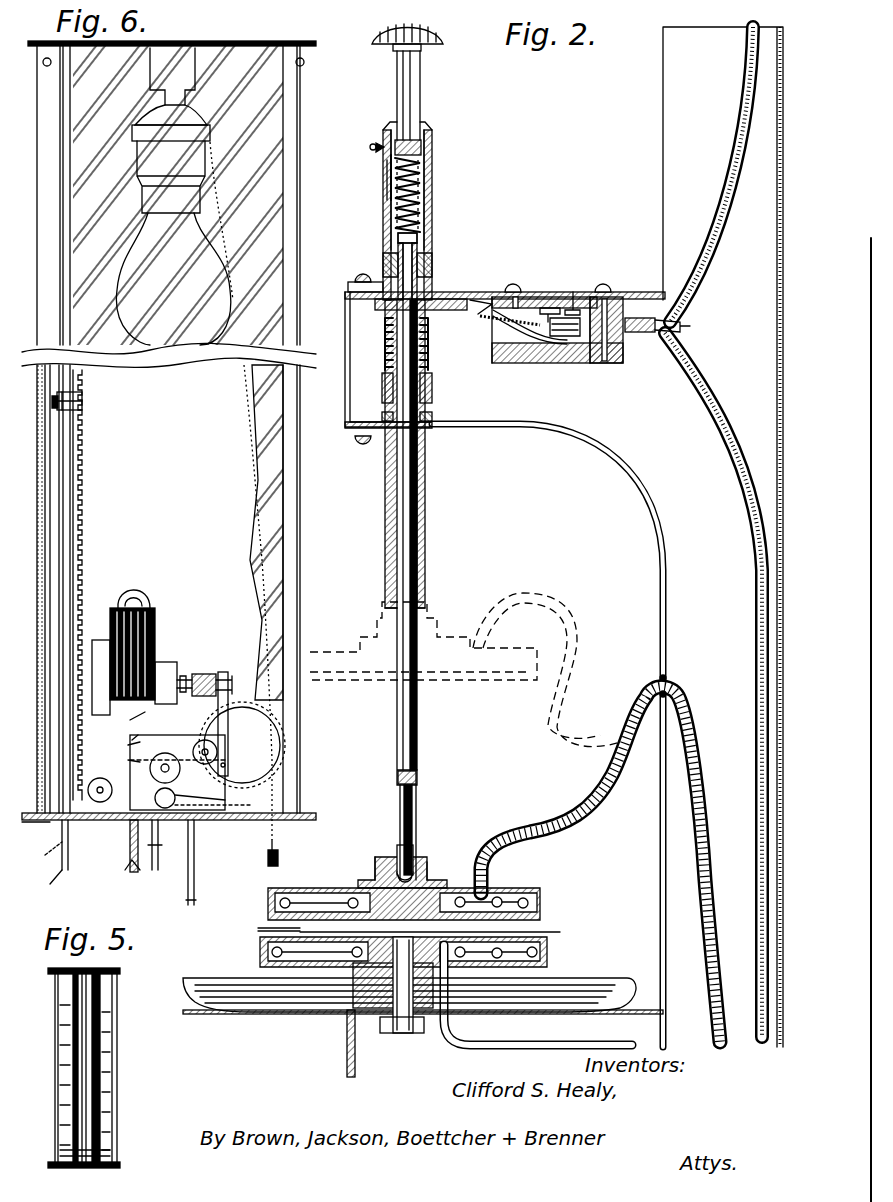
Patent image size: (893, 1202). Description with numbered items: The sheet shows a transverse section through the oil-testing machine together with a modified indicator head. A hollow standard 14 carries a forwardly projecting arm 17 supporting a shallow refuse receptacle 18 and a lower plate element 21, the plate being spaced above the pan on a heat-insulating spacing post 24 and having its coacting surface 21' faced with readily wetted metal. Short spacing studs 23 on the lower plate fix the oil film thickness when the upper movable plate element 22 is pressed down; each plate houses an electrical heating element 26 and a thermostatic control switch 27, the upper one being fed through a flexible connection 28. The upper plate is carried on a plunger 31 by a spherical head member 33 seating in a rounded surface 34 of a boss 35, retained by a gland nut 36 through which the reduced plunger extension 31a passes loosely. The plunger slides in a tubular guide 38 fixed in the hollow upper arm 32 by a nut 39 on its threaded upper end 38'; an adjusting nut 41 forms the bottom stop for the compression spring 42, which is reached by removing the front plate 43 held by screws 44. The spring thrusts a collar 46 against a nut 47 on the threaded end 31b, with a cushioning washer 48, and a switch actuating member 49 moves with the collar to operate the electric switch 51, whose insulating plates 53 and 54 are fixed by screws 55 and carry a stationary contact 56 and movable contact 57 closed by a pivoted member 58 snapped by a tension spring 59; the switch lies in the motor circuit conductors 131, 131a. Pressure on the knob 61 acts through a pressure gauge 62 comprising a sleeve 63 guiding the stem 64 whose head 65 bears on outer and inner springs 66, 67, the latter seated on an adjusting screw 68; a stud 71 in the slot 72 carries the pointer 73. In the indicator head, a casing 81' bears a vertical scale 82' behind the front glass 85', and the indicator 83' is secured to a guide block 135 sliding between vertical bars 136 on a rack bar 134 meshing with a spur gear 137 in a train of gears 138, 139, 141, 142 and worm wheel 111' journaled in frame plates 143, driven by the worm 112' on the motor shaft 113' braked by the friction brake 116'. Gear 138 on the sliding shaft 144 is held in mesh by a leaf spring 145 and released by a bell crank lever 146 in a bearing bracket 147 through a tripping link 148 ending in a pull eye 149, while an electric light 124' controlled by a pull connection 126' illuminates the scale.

In FIG. 6, the standard 14 is at (62, 872).
In FIG. 5, the standard 14 is at (50, 1166).
In FIG. 2, the standard 14 is at (659, 824).
In FIG. 2, the arm 17 is at (347, 1062).
In FIG. 2, the refuse receptacle 18 is at (213, 1014).
In FIG. 2, the lower plate element 21 is at (424, 952).
In FIG. 2, the coacting surface of lower plate element 21' is at (453, 930).
In FIG. 2, the upper movable plate element 22 is at (526, 680).
In FIG. 2, the spacing studs 23 is at (258, 930).
In FIG. 2, the spacing post 24 is at (342, 1010).
In FIG. 2, the electrical heating element 26 is at (335, 890).
In FIG. 2, the thermostatic control switch 27 is at (504, 895).
In FIG. 2, the flexible connection 28 is at (590, 790).
In FIG. 2, the plunger 31 is at (418, 706).
In FIG. 2, the reduced plunger extension 31a is at (414, 808).
In FIG. 2, the reduced threaded end of plunger rod 31b is at (384, 270).
In FIG. 2, the upper arm 32 is at (498, 426).
In FIG. 2, the head member 33 is at (437, 878).
In FIG. 2, the rounded surface 34 is at (374, 882).
In FIG. 2, the boss 35 is at (425, 862).
In FIG. 2, the gland nut 36 is at (382, 858).
In FIG. 2, the tubular guide 38 is at (425, 454).
In FIG. 2, the threaded upper end of tubular guide 38' is at (425, 409).
In FIG. 2, the nut 39 is at (350, 420).
In FIG. 2, the adjusting nut 41 is at (382, 390).
In FIG. 2, the compression spring 42 is at (432, 355).
In FIG. 2, the removable front plate 43 is at (346, 352).
In FIG. 2, the screws 44 is at (354, 288).
In FIG. 2, the collar 46 is at (425, 280).
In FIG. 2, the nut 47 is at (420, 262).
In FIG. 2, the cushioning washer 48 is at (436, 295).
In FIG. 2, the switch actuating member 49 is at (378, 308).
In FIG. 2, the electric switch 51 is at (636, 375).
In FIG. 2, the upper insulating plate 53 is at (574, 290).
In FIG. 2, the lower insulating plate 54 is at (598, 366).
In FIG. 2, the screws 55 is at (513, 284).
In FIG. 2, the stationary contact 56 is at (550, 296).
In FIG. 2, the movable contact 57 is at (574, 364).
In FIG. 2, the switch actuating member 58 is at (514, 364).
In FIG. 2, the tension spring 59 is at (495, 318).
In FIG. 2, the knob 61 is at (388, 33).
In FIG. 2, the pressure gauge 62 is at (366, 190).
In FIG. 2, the sleeve 63 is at (433, 218).
In FIG. 2, the stem 64 is at (422, 90).
In FIG. 2, the head 65 is at (424, 151).
In FIG. 2, the outer compression spring 66 is at (424, 172).
In FIG. 2, the inner compression spring 67 is at (425, 192).
In FIG. 2, the adjusting screw 68 is at (395, 250).
In FIG. 2, the stud 71 is at (388, 160).
In FIG. 2, the vertical slot 72 is at (388, 198).
In FIG. 2, the pointer 73 is at (372, 145).
In FIG. 6, the casing 81' is at (172, 27).
In FIG. 5, the casing 81' is at (107, 962).
In FIG. 5, the scale 82' is at (110, 1068).
In FIG. 6, the indicator 83' is at (30, 423).
In FIG. 5, the indicator 83' is at (109, 1146).
In FIG. 6, the front glass 85' is at (153, 429).
In FIG. 5, the front glass 85' is at (121, 1068).
In FIG. 6, the worm wheel 111' is at (218, 661).
In FIG. 6, the worm 112' is at (210, 675).
In FIG. 6, the motor shaft 113' is at (190, 664).
In FIG. 6, the friction brake 116' is at (246, 710).
In FIG. 6, the electric light 124' is at (169, 373).
In FIG. 6, the pull connection 126' is at (269, 504).
In FIG. 2, the conductor 131 is at (678, 318).
In FIG. 2, the conductor 131a is at (682, 328).
In FIG. 6, the rack bar 134 is at (75, 535).
In FIG. 6, the guide block 135 is at (60, 387).
In FIG. 6, the vertical bars 136 is at (64, 344).
In FIG. 5, the vertical bars 136 is at (56, 990).
In FIG. 6, the spur gear 137 is at (42, 863).
In FIG. 6, the gear 138 is at (140, 830).
In FIG. 6, the gear 139 is at (195, 822).
In FIG. 6, the gear 141 is at (230, 812).
In FIG. 6, the gear 142 is at (250, 760).
In FIG. 6, the frame plates 143 is at (228, 800).
In FIG. 6, the shaft 144 is at (119, 759).
In FIG. 6, the leaf spring 145 is at (156, 772).
In FIG. 6, the bell crank lever 146 is at (130, 745).
In FIG. 6, the bearing bracket 147 is at (132, 722).
In FIG. 6, the tripping link 148 is at (196, 858).
In FIG. 6, the pull eye 149 is at (196, 888).